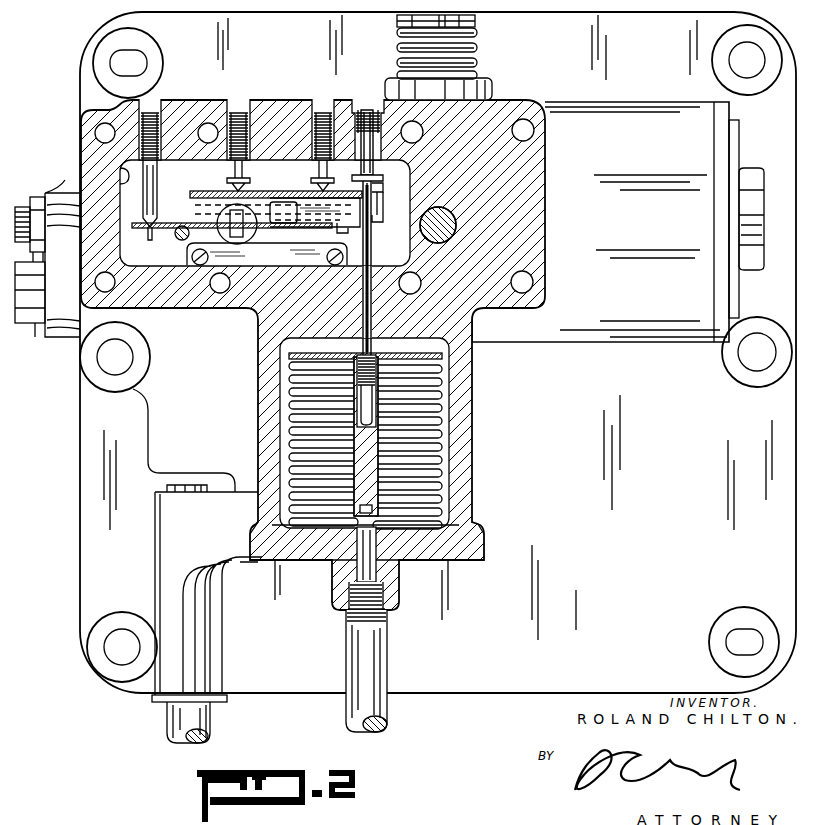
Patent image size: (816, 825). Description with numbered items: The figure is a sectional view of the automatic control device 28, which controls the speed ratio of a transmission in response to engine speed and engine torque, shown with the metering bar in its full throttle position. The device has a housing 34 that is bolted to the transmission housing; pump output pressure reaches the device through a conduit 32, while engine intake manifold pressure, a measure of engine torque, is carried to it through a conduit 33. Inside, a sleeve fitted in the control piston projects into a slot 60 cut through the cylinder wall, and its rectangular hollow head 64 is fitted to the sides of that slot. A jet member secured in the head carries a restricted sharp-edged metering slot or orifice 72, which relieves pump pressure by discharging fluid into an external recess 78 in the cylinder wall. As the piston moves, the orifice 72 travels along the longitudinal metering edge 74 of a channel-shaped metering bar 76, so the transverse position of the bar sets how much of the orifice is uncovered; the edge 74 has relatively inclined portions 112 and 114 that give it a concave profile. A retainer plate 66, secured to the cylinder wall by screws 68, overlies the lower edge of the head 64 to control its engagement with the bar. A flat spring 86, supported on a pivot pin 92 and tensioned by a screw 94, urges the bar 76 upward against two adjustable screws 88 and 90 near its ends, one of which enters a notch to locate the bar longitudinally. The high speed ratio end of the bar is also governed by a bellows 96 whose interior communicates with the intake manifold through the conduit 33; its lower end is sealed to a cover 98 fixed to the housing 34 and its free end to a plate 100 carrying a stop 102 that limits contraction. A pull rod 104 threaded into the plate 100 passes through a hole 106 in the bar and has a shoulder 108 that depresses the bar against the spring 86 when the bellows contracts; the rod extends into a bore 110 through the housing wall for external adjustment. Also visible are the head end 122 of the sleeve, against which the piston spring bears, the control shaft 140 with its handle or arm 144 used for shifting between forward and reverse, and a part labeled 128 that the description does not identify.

The automatic control device 28 is at (73, 102).
The conduit 32 is at (167, 721).
The conduit 33 is at (346, 708).
The housing 34 is at (157, 300).
The slot 60 is at (339, 226).
The rectangular hollow head 64 is at (258, 236).
The retainer plate 66 is at (249, 309).
The screws 68 is at (191, 258).
The metering slot 72 is at (241, 240).
The longitudinal edge 74 is at (380, 222).
The metering bar 76 is at (384, 184).
The recess 78 is at (118, 174).
The flat spring 86 is at (178, 213).
The adjustable screw 88 is at (228, 169).
The adjustable screw 90 is at (313, 169).
The fulcrum or pivot pin 92 is at (152, 240).
The screw 94 is at (152, 184).
The bellows 96 is at (288, 441).
The cover 98 is at (444, 556).
The plate 100 is at (322, 352).
The stop 102 is at (355, 510).
The pull rod 104 is at (372, 254).
The hole 106 is at (383, 208).
The shoulder 108 is at (381, 177).
The bore 110 is at (366, 98).
The inclined portion 112 is at (250, 200).
The inclined portion 114 is at (332, 222).
The head end 122 is at (731, 153).
The pin 128 is at (447, 228).
The control shaft 140 is at (397, 44).
The handle or arm 144 is at (471, 21).